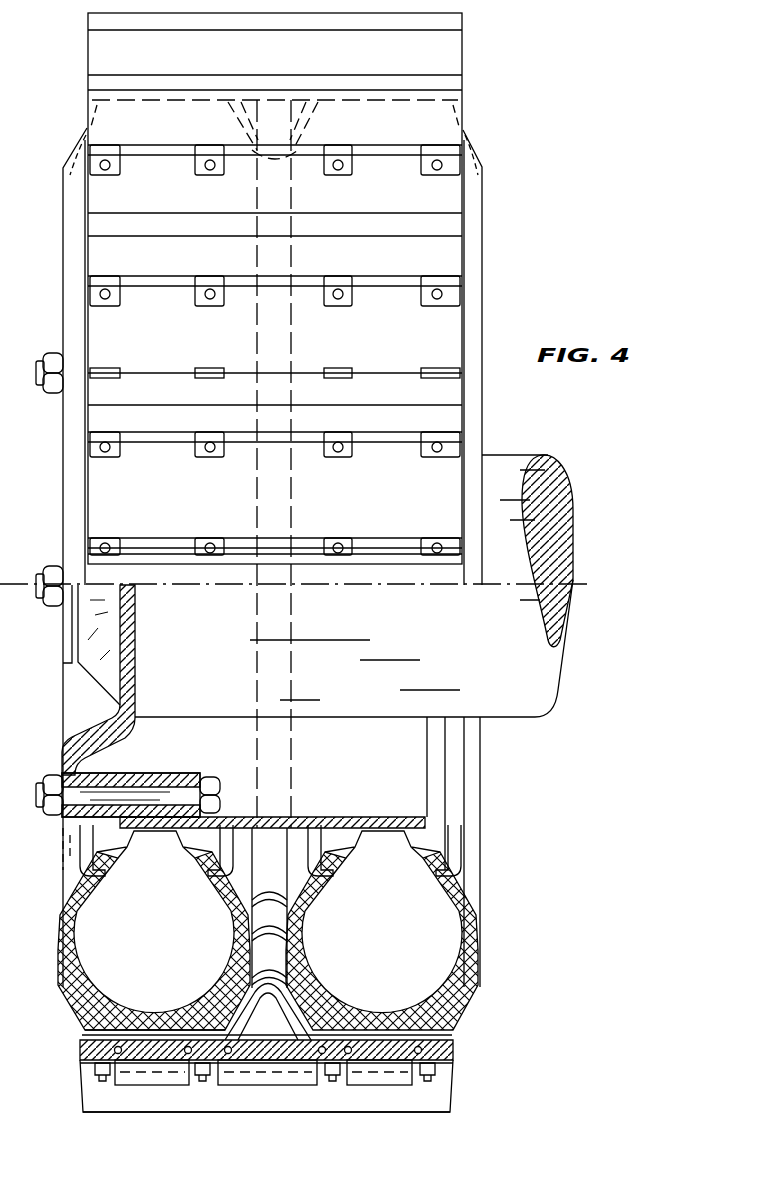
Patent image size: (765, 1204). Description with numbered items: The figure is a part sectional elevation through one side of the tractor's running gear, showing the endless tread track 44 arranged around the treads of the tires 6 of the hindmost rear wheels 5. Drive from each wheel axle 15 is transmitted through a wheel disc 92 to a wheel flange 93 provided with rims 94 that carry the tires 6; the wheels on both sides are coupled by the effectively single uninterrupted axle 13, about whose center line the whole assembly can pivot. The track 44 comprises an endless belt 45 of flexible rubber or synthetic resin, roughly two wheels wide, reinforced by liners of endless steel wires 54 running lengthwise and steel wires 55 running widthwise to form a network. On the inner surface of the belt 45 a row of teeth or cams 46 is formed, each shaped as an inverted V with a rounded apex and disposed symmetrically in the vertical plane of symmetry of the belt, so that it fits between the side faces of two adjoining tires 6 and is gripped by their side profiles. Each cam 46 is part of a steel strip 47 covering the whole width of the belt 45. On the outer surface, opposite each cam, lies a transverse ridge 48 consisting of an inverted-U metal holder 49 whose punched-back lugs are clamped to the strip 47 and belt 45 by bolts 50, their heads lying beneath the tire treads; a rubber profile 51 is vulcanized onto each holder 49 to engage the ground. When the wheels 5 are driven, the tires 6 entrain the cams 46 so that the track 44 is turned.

The hindmost rear wheels 5 is at (40, 468).
The tires 6 is at (62, 226).
The uninterrupted axle 13 is at (552, 458).
The wheel axle 15 is at (368, 585).
The endless tread track 44 is at (466, 108).
The endless belt 45 is at (456, 1050).
The teeth or cams 46 is at (312, 129).
The steel strip 47 is at (82, 1036).
The transverse ridges 48 is at (368, 1105).
The metal holder 49 is at (163, 158).
The bolts 50 is at (108, 172).
The rubber profile 51 is at (388, 22).
The endless steel wires 54 is at (238, 1040).
The steel wires 55 is at (145, 1032).
The wheel disc 92 is at (128, 665).
The wheel flange 93 is at (305, 815).
The rims 94 is at (165, 838).